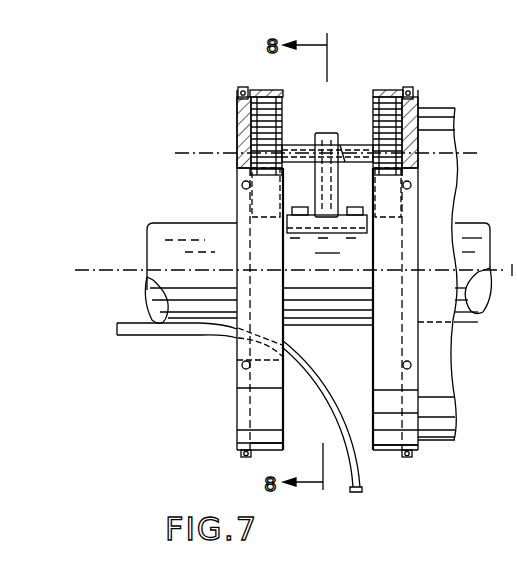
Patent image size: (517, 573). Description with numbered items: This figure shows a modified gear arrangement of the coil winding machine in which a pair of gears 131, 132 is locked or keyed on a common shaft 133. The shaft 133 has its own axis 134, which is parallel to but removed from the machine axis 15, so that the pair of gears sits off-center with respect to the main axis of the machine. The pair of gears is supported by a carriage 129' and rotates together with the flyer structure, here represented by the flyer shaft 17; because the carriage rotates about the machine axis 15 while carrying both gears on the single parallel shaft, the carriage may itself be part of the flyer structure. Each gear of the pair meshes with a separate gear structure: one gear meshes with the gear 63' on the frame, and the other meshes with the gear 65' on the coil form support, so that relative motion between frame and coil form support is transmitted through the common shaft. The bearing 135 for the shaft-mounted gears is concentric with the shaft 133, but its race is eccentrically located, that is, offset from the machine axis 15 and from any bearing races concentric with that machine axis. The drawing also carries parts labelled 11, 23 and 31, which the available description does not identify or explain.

The side plate 11 is at (237, 408).
The machine axis 15 is at (113, 272).
The flyer shaft 17 is at (168, 222).
The curved strip 23 is at (330, 385).
The side plate 31 is at (433, 113).
The gear 63' is at (285, 428).
The gear 65' is at (391, 463).
The carriage 129' is at (243, 182).
The gear 131 is at (280, 110).
The gear 132 is at (372, 108).
The shaft 133 is at (350, 147).
The axis 134 is at (203, 153).
The bearing 135 is at (343, 150).